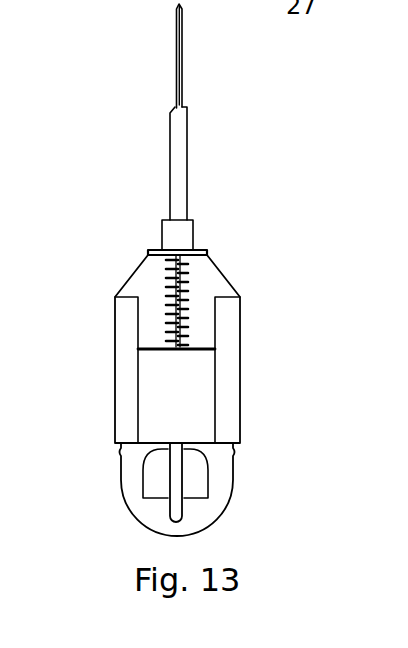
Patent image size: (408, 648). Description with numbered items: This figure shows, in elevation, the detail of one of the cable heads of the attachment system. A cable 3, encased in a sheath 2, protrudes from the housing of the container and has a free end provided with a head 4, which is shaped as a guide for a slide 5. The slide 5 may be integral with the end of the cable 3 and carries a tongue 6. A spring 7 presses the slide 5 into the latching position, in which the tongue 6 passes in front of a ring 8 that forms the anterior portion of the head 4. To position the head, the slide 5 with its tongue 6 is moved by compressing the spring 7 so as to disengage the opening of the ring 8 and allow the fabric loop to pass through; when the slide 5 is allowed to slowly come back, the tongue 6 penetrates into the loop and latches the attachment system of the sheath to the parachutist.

The sheath 2 is at (180, 164).
The cable 3 is at (175, 53).
The head 4 is at (135, 363).
The slide 5 is at (184, 398).
The tongue 6 is at (178, 473).
The spring 7 is at (183, 293).
The ring 8 is at (140, 482).